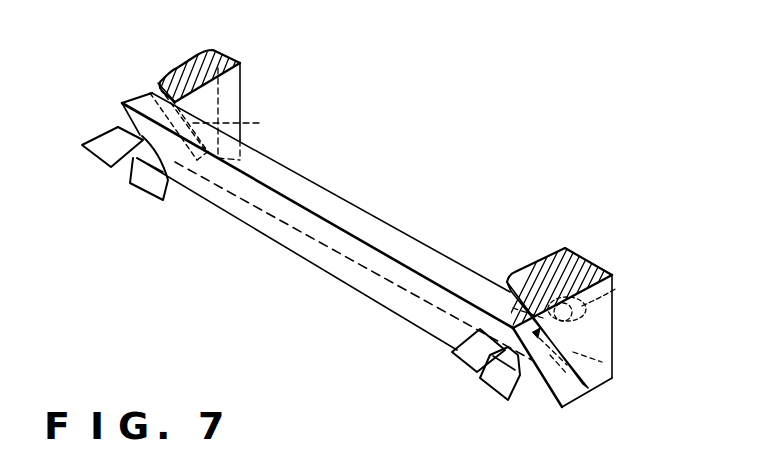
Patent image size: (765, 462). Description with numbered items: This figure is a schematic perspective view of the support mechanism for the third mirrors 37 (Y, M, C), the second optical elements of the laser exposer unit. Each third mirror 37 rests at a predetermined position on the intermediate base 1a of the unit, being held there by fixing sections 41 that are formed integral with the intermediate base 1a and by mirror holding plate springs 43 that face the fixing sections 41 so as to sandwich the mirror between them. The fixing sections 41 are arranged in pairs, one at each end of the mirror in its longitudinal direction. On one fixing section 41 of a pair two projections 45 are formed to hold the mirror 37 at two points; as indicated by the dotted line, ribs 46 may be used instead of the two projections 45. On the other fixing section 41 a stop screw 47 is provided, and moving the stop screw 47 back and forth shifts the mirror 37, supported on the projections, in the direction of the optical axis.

The intermediate base 1a is at (198, 68).
The third mirrors 37 is at (578, 393).
The fixing sections 41 is at (210, 97).
The mirror holding plate springs 43 is at (103, 152).
The projections 45 is at (150, 105).
The ribs 46 is at (241, 121).
The stop screws 47 is at (617, 288).